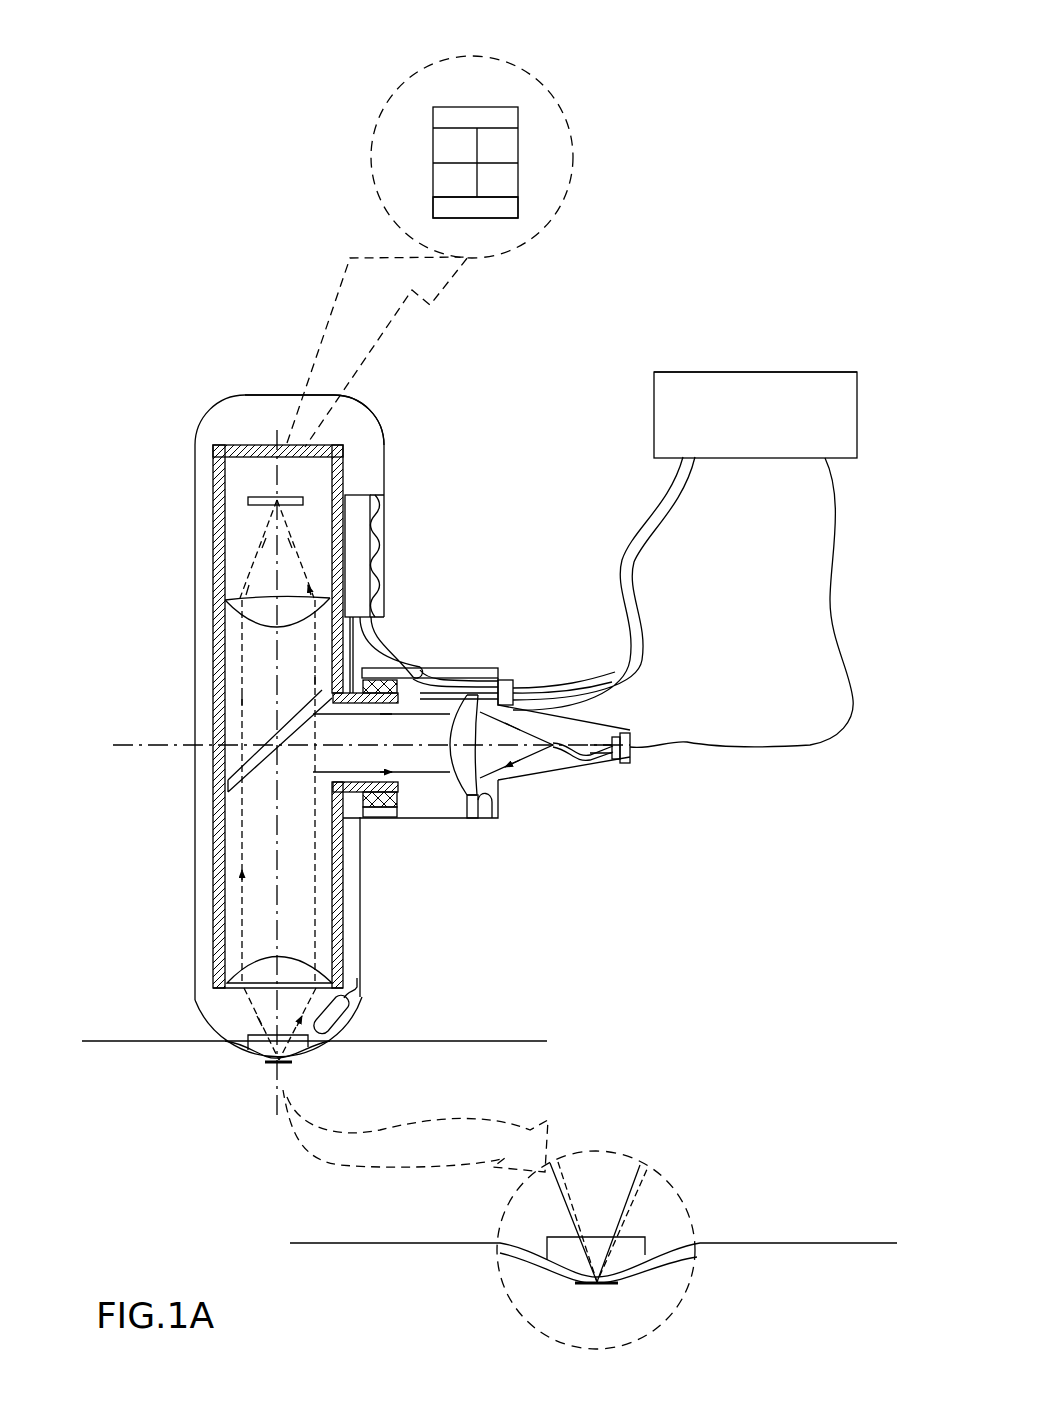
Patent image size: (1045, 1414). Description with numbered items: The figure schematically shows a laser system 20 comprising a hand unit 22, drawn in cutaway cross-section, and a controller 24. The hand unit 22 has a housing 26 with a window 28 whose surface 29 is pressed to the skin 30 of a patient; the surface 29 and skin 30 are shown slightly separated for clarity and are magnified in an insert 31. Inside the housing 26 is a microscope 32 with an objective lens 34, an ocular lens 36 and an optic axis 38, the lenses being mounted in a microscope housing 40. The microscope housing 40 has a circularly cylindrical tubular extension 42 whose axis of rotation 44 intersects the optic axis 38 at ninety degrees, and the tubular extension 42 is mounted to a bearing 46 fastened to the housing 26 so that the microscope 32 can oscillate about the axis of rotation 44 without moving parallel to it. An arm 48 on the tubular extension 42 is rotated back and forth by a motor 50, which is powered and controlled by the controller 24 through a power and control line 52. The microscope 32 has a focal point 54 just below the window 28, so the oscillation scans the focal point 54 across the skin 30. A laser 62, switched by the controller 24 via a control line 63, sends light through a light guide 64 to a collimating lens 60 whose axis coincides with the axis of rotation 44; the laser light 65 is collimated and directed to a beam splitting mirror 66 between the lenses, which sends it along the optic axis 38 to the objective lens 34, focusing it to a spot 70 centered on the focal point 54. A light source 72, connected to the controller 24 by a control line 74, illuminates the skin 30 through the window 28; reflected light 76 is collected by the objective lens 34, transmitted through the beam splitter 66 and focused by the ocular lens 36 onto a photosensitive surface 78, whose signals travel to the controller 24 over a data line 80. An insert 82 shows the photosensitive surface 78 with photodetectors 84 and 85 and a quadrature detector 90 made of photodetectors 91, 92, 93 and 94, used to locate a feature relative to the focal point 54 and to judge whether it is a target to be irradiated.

The laser system 20 is at (713, 100).
The hand unit 22 is at (240, 385).
The controller 24 is at (755, 350).
The housing 26 is at (289, 395).
The window 28 is at (248, 1037).
The surface 29 is at (277, 1057).
The skin 30 is at (465, 1053).
The insert 31 is at (623, 1153).
The microscope 32 is at (330, 420).
The objective lens 34 is at (327, 970).
The ocular lens 36 is at (227, 600).
The optic axis 38 is at (277, 667).
The microscope housing 40 is at (352, 432).
The tubular extension 42 is at (353, 797).
The axis of rotation 44 is at (127, 748).
The bearing 46 is at (402, 707).
The arm 48 is at (227, 695).
The motor 50 is at (362, 537).
The power and control line 52 is at (372, 645).
The focal point 54 is at (279, 1063).
The collimating lens 60 is at (485, 800).
The laser 62 is at (630, 757).
The control line 63 is at (687, 740).
The light guide 64 is at (597, 757).
The laser light 65 is at (242, 855).
The beam splitting mirror 66 is at (228, 733).
The spot 70 is at (277, 1063).
The light source 72 is at (333, 1017).
The control line 74 is at (357, 987).
The reflected light 76 is at (300, 568).
The photosensitive surface 78 is at (247, 498).
The data line 80 is at (345, 492).
The insert 82 is at (385, 72).
The photodetector 84 is at (507, 117).
The photodetector 85 is at (493, 210).
The quadrature detector 90 is at (543, 160).
The photodetector 91 is at (510, 157).
The photodetector 92 is at (466, 157).
The photodetector 93 is at (466, 192).
The photodetector 94 is at (510, 192).